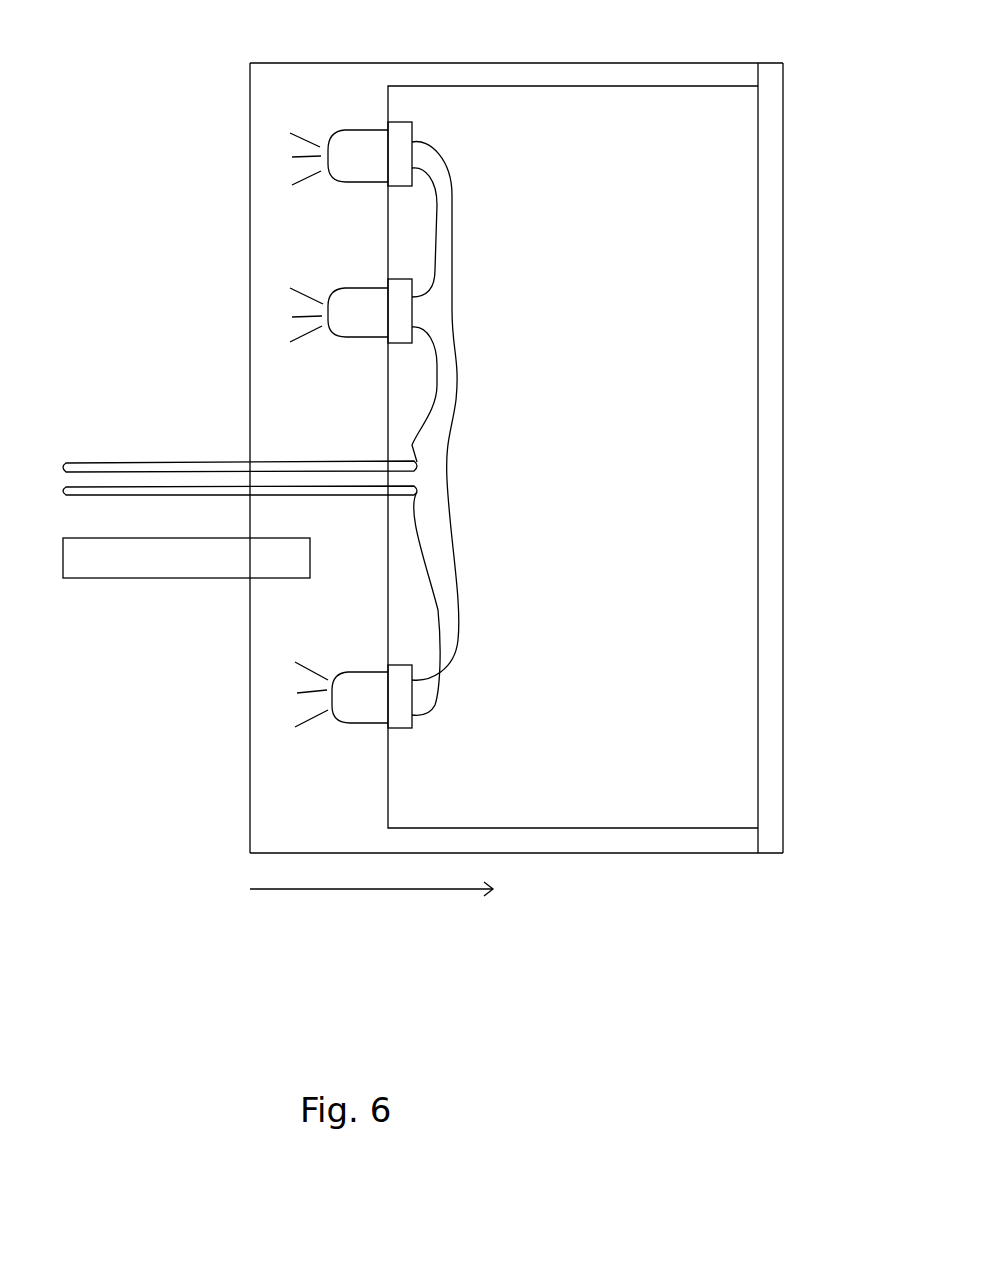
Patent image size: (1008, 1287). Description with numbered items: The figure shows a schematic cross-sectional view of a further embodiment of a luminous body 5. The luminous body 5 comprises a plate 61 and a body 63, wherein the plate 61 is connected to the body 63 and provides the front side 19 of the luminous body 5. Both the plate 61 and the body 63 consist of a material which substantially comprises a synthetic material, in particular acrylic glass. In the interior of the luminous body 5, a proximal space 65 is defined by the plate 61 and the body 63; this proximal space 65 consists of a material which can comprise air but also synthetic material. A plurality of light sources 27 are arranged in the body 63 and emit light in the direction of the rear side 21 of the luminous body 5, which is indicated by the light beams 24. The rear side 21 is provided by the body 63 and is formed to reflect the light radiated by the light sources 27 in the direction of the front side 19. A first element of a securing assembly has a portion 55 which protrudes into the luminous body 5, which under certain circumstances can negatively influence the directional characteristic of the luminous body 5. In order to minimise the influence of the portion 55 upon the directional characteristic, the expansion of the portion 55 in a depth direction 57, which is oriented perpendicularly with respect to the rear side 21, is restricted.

The luminous body 5 is at (503, 63).
The front side 19 is at (781, 473).
The rear side 21 is at (250, 680).
The light beams 24 is at (305, 447).
The light sources 27 is at (358, 128).
The portion 55 is at (311, 557).
The depth direction 57 is at (345, 895).
The plate 61 is at (783, 101).
The body 63 is at (690, 853).
The proximal space 65 is at (712, 807).